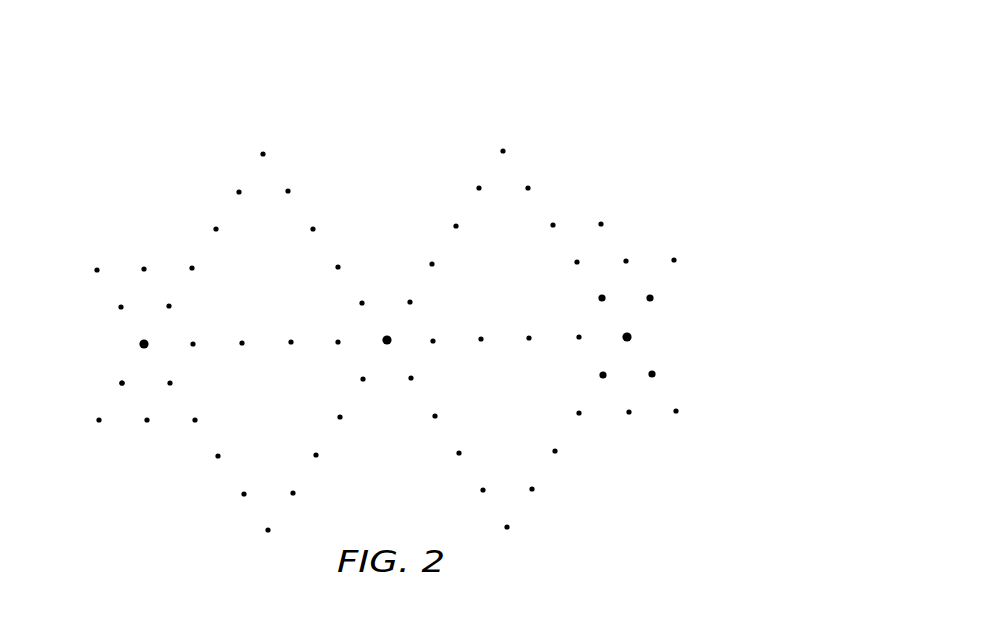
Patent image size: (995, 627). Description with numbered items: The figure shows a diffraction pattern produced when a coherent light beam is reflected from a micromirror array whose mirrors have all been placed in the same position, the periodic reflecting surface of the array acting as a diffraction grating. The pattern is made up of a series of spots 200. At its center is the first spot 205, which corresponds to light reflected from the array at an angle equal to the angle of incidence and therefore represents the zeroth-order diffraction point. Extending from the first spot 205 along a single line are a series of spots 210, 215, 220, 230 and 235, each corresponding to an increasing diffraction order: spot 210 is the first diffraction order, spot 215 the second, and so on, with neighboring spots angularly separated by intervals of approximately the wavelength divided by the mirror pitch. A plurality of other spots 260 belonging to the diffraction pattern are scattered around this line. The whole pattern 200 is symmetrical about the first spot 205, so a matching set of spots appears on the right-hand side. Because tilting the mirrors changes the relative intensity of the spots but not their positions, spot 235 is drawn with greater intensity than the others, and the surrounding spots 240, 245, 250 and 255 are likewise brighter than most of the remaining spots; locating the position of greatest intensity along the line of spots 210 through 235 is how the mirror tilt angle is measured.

The spots 200 is at (443, 101).
The first spot 205 is at (386, 334).
The spot 210 is at (337, 348).
The spot 215 is at (291, 336).
The spot 220 is at (241, 348).
The spot 230 is at (193, 338).
The spot 235 is at (138, 343).
The spot 240 is at (116, 307).
The spot 245 is at (117, 383).
The spot 250 is at (170, 390).
The spot 255 is at (168, 300).
The other spots 260 is at (261, 147).